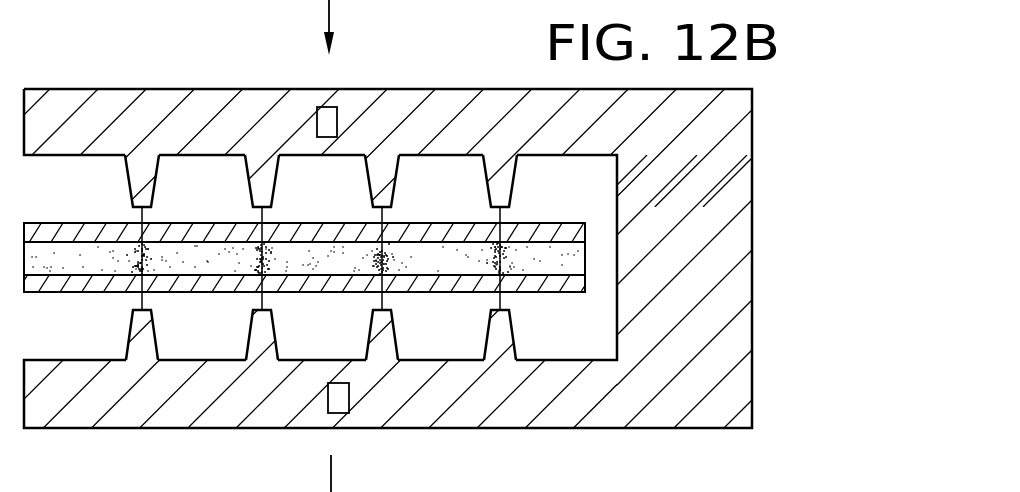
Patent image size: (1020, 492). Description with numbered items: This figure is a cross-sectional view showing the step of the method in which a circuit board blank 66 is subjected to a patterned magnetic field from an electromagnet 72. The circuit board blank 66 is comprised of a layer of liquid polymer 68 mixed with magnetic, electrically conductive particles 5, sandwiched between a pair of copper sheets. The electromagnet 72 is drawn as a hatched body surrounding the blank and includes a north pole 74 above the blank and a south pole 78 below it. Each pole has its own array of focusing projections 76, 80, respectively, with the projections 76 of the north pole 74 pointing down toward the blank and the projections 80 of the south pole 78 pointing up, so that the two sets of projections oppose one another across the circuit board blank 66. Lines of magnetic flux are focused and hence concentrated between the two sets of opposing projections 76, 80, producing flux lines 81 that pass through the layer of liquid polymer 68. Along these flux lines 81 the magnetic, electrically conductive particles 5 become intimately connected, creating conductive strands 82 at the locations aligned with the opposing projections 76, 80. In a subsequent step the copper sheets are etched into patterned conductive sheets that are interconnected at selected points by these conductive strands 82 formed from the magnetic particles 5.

The electromagnet 72 is at (80, 62).
The north pole 74 is at (335, 108).
The focusing projections 76 is at (490, 202).
The south pole 78 is at (338, 413).
The focusing projections 80 is at (487, 317).
The flux lines 81 is at (332, 213).
The conductive strands 82 is at (131, 266).
The magnetic, electrically conductive particles 5 is at (297, 260).
The circuit board blank 66 is at (70, 212).
The liquid polymer 68 is at (62, 258).